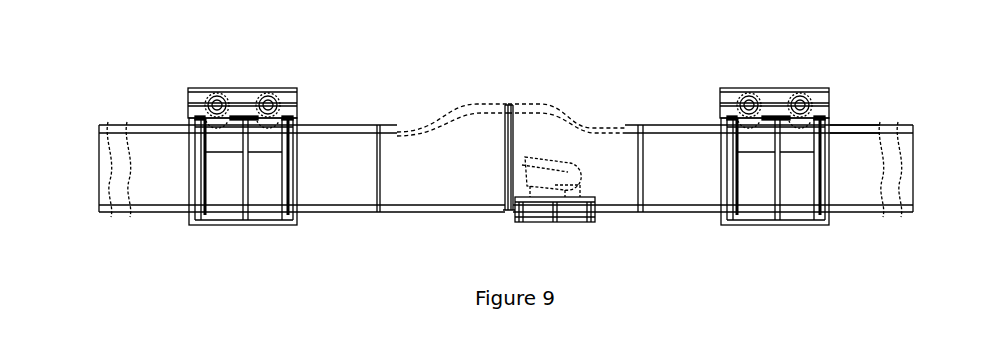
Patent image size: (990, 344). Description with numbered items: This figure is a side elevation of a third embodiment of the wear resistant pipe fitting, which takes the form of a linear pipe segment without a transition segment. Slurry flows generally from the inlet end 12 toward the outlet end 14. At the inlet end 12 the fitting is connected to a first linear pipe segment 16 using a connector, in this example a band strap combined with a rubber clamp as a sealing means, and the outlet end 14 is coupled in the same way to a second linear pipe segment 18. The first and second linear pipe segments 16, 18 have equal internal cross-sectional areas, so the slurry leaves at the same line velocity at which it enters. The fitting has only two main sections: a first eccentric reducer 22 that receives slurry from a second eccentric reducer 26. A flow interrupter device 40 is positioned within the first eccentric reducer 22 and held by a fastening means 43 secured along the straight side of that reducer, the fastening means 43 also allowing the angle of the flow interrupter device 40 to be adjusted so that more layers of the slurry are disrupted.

The inlet end 12 is at (914, 170).
The outlet end 14 is at (100, 172).
The first linear pipe segment 16 is at (855, 125).
The second linear pipe segment 18 is at (146, 125).
The first eccentric reducer 22 is at (575, 115).
The second eccentric reducer 26 is at (440, 114).
The flow interrupter device 40 is at (530, 167).
The fastening means 43 is at (573, 222).